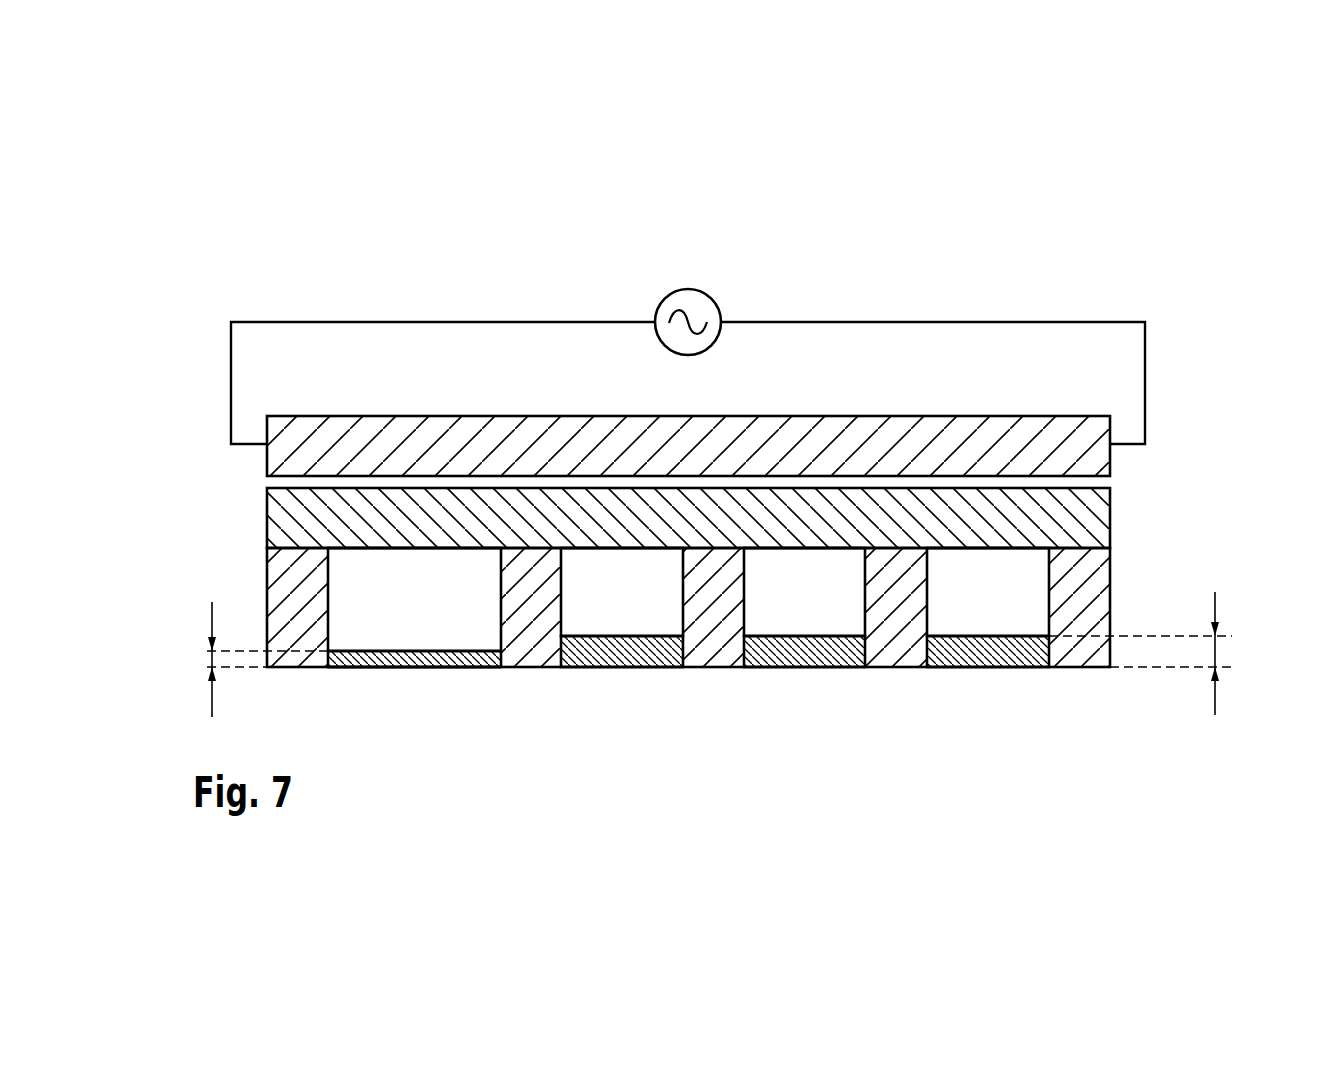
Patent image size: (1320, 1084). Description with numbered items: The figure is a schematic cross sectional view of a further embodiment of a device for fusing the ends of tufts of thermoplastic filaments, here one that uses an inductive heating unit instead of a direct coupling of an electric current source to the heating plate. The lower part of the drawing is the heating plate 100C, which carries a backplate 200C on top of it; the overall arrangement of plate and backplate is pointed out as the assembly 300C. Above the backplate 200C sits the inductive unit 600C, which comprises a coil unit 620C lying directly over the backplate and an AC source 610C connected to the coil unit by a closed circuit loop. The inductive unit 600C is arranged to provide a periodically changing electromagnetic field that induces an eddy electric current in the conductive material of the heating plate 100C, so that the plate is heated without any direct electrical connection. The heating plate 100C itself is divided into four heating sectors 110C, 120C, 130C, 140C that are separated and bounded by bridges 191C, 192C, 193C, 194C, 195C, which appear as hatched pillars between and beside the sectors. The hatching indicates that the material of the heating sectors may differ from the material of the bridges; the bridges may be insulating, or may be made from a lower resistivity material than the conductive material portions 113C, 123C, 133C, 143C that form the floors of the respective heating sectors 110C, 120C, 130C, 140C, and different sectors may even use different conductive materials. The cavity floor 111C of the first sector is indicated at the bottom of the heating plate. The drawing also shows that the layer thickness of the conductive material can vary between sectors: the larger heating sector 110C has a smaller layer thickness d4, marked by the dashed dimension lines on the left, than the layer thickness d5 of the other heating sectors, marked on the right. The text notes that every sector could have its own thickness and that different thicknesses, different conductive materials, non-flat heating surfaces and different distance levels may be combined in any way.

The inductive unit 600C is at (769, 321).
The AC source 610C is at (688, 289).
The coil unit 620C is at (1092, 455).
The sensor device 300C is at (668, 609).
The backplate 200C is at (1092, 517).
The heating plate 100C is at (717, 675).
The bridge 191C is at (290, 577).
The bridge 192C is at (533, 650).
The bridge 193C is at (715, 650).
The bridge 194C is at (900, 650).
The bridge 195C is at (1083, 650).
The heating sector 110C is at (423, 675).
The cavity bottom 111C is at (422, 668).
The conductive material portion 113C is at (363, 668).
The heating sector 120C is at (630, 674).
The conductive material portion 123C is at (607, 652).
The heating sector 130C is at (813, 674).
The conductive material portion 133C is at (791, 652).
The heating sector 140C is at (997, 675).
The conductive material portion 143C is at (971, 658).
The layer thickness d4 is at (250, 659).
The layer thickness d5 is at (1148, 653).